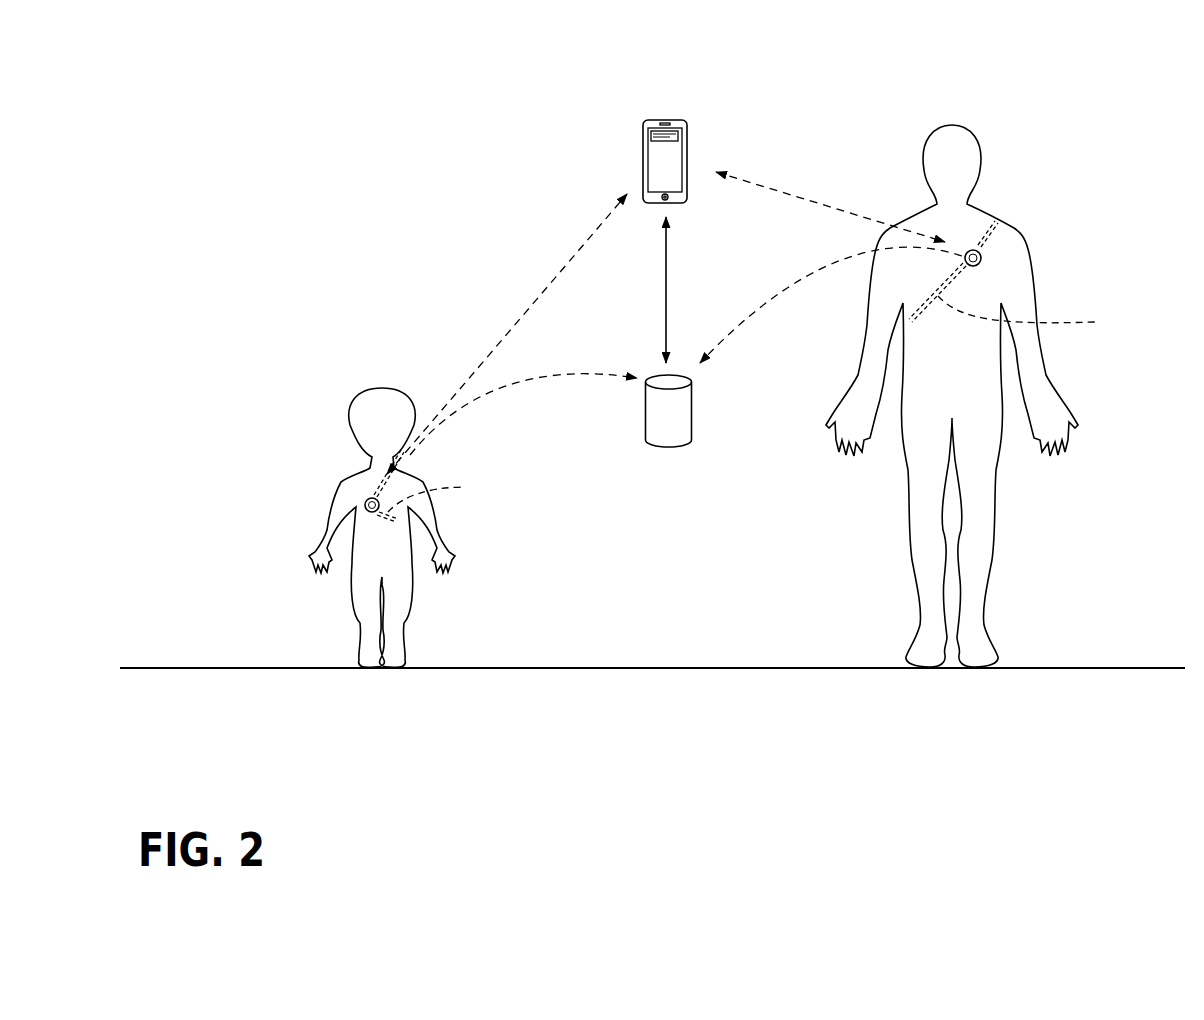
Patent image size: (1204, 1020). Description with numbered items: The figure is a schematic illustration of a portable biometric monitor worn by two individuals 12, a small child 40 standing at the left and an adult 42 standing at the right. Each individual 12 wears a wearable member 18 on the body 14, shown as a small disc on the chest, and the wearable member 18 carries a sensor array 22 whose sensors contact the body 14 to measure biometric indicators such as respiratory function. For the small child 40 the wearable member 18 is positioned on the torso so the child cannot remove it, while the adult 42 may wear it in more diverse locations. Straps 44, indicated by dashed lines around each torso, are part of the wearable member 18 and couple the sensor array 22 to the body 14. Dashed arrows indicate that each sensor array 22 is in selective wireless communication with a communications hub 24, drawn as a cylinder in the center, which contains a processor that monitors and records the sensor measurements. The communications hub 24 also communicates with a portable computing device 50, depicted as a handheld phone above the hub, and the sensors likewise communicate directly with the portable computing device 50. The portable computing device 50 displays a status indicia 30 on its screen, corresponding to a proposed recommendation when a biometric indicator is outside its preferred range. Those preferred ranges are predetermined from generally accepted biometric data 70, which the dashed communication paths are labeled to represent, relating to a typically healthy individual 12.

The individual 12 is at (385, 375).
The body 14 is at (1005, 288).
The wearable member 18 is at (992, 262).
The sensor array 22 is at (968, 244).
The communications hub 24 is at (662, 450).
The status indicia 30 is at (683, 137).
The small child 40 is at (326, 471).
The adult 42 is at (1017, 200).
The straps 44 is at (761, 404).
The portable computing device 50 is at (699, 123).
The generally accepted biometric data 70 is at (507, 387).